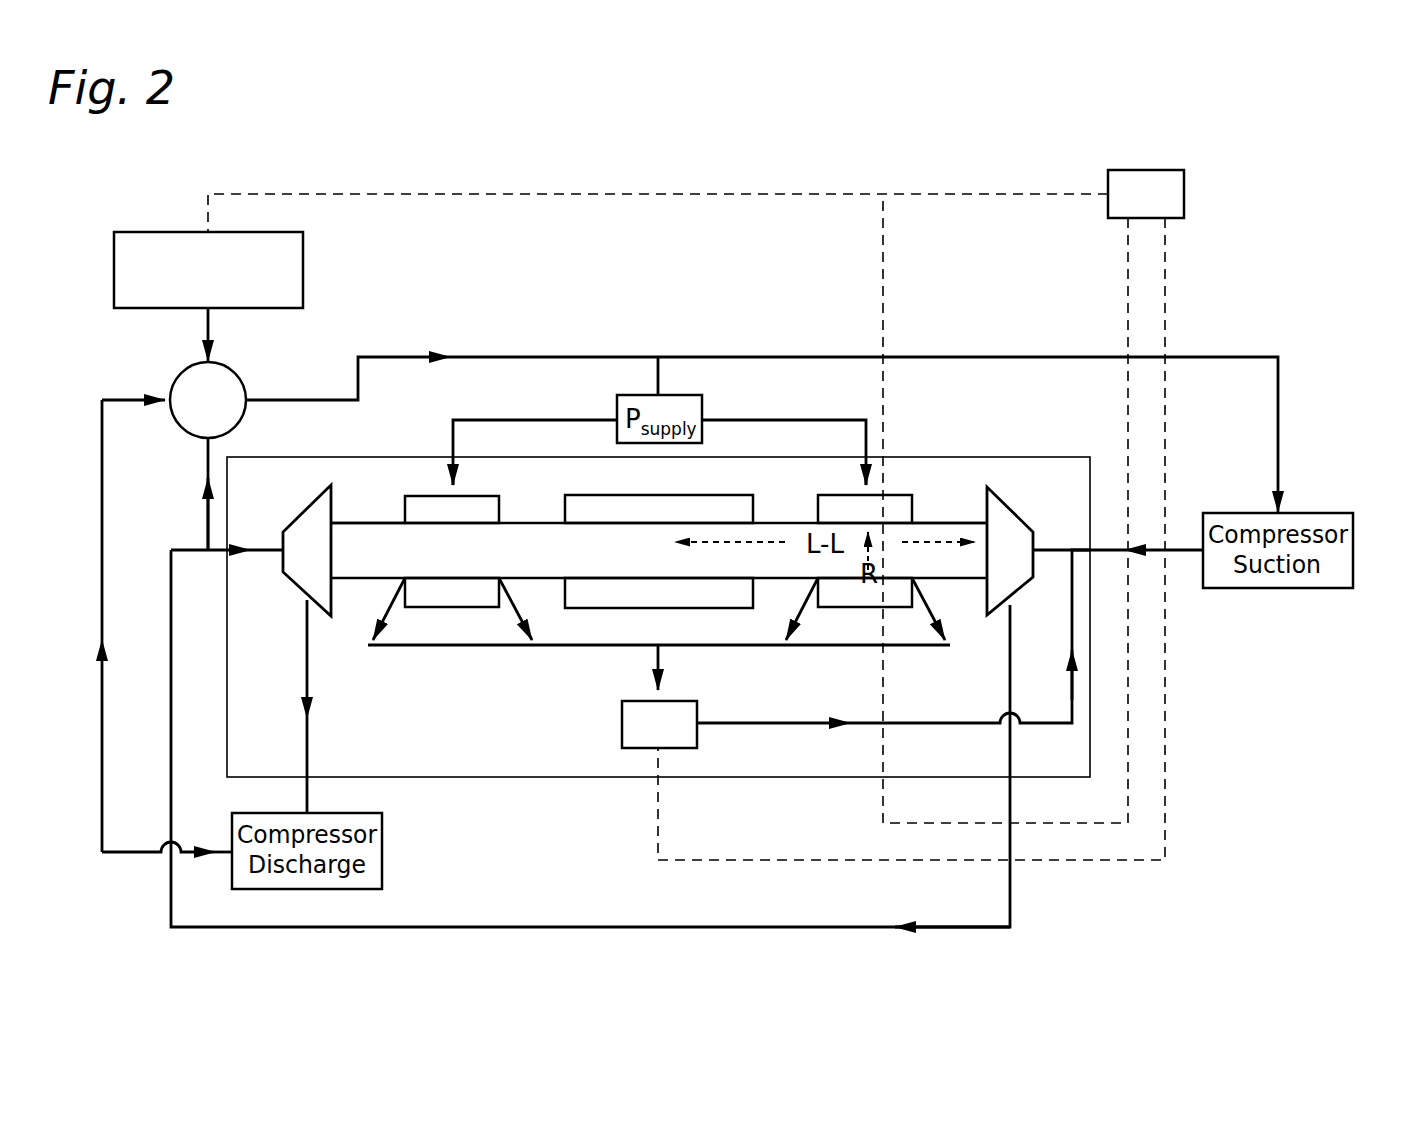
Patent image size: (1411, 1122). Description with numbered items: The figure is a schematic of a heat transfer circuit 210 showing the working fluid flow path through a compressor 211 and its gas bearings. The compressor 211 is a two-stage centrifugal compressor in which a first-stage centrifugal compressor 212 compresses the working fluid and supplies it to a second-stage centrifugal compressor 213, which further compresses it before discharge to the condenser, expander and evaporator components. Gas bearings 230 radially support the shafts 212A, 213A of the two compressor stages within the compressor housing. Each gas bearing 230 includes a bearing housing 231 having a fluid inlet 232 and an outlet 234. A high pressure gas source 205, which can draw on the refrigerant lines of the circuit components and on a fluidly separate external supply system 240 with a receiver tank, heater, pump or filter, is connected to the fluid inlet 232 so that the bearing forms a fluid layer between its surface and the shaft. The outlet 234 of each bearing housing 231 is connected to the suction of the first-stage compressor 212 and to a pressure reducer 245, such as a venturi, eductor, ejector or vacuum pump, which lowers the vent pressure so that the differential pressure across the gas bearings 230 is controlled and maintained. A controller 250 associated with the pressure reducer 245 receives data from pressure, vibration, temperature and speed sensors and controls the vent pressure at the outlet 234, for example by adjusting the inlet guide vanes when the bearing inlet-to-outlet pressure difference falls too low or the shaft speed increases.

The heat transfer circuit 210 is at (1275, 185).
The external supply system 240 is at (175, 231).
The high pressure gas source 205 is at (238, 373).
The controller 250 is at (696, 515).
The compressor 211 is at (712, 475).
The second-stage centrifugal compressor 213 is at (322, 612).
The shaft 213A is at (368, 522).
The first-stage centrifugal compressor 212 is at (1000, 610).
The shaft 212A is at (947, 521).
The gas bearing 230 is at (412, 493).
The bearing housing 231 is at (432, 609).
The fluid inlet 232 is at (456, 494).
The outlet 234 is at (500, 581).
The pressure reducer 245 is at (620, 740).